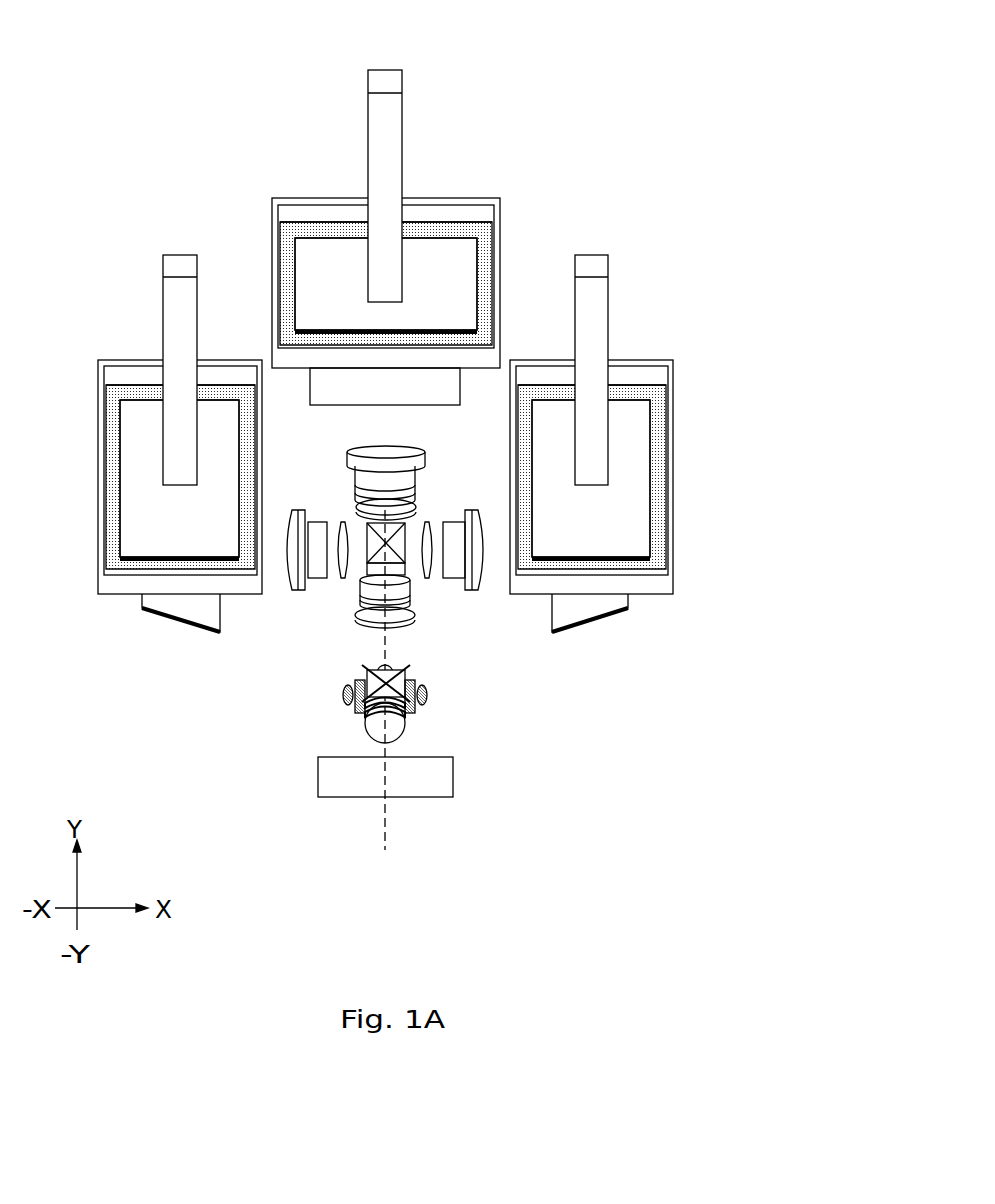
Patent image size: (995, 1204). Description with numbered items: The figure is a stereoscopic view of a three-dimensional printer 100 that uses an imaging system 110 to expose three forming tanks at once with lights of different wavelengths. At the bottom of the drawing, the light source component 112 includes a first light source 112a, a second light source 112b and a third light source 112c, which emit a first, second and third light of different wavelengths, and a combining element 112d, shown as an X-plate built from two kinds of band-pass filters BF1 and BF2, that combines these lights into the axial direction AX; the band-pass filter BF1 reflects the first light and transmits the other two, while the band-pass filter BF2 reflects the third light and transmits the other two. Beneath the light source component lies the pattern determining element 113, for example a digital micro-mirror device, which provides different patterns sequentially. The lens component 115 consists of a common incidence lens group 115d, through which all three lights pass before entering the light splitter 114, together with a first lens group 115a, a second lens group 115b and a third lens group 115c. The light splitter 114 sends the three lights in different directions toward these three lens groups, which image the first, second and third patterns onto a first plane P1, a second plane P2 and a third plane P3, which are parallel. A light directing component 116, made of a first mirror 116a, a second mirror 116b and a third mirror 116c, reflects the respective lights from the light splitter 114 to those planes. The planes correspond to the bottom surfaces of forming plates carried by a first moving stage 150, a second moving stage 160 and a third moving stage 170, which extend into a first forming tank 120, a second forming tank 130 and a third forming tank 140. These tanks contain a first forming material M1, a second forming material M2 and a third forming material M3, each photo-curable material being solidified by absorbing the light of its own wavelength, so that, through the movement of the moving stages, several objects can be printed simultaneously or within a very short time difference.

The three-dimensional printer 100 is at (128, 45).
The imaging system 110 is at (431, 729).
The light source component 112 is at (481, 697).
The first light source 112a is at (427, 693).
The second light source 112b is at (407, 684).
The third light source 112c is at (405, 672).
The combining element 112d is at (459, 728).
The band-pass filter BF1 is at (403, 703).
The band-pass filter BF2 is at (405, 715).
The pattern determining element 113 is at (318, 790).
The light splitter 114 is at (368, 564).
The lens component 115 is at (549, 520).
The first lens group 115a is at (350, 468).
The second lens group 115b is at (398, 470).
The third lens group 115c is at (470, 523).
The common incidence lens group 115d is at (424, 582).
The light directing component 116 is at (349, 588).
The first mirror 116a is at (207, 613).
The second mirror 116b is at (342, 390).
The third mirror 116c is at (567, 608).
The first forming tank 120 is at (138, 424).
The second forming tank 130 is at (411, 219).
The third forming tank 140 is at (629, 461).
The first moving stage 150 is at (168, 290).
The second moving stage 160 is at (388, 139).
The third moving stage 170 is at (594, 306).
The first forming material M1 is at (104, 402).
The second forming material M2 is at (488, 240).
The third forming material M3 is at (630, 385).
The first plane P1 is at (138, 566).
The second plane P2 is at (300, 333).
The third plane P3 is at (628, 597).
The axial direction AX is at (388, 830).